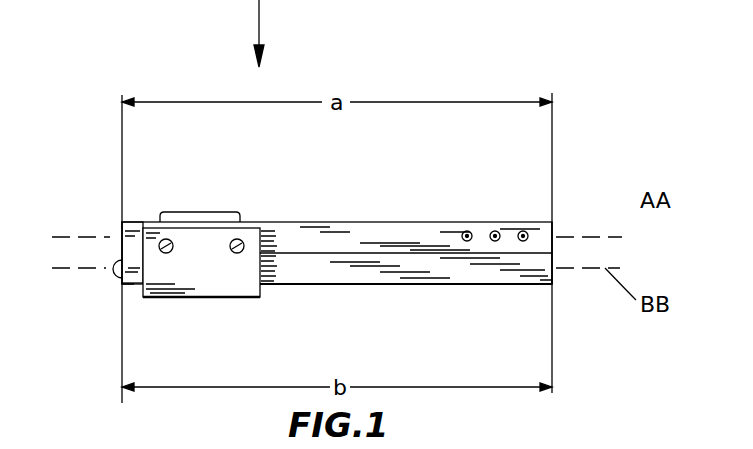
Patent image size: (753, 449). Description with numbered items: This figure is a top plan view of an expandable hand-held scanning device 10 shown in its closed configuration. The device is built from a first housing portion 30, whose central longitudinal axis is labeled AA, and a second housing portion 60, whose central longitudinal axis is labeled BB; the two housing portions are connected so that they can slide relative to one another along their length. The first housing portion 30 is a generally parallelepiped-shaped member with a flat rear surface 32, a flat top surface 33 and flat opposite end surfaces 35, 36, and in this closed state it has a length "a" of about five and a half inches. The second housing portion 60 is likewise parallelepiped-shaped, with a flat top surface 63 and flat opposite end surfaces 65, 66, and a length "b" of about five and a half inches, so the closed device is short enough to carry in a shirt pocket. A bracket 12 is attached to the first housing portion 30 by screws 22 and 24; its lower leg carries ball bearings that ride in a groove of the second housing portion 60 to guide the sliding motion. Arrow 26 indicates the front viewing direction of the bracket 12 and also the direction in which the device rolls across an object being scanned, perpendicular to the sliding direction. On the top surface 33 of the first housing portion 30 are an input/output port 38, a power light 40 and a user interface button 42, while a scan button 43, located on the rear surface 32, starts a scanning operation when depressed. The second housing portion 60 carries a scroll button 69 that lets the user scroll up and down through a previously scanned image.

The expandable hand-held scanning device 10 is at (566, 179).
The bracket 12 is at (258, 298).
The screw 22 is at (166, 239).
The screw 24 is at (238, 239).
The arrow 26 is at (262, 20).
The first housing portion 30 is at (298, 221).
The rear surface 32 is at (398, 222).
The top surface 33 is at (340, 226).
The end surface 35 is at (122, 230).
The end surface 36 is at (553, 230).
The input/output port 38 is at (523, 231).
The power light 40 is at (495, 231).
The user interface button 42 is at (466, 231).
The scan button 43 is at (196, 212).
The second housing portion 60 is at (338, 287).
The top surface 63 is at (411, 272).
The end surface 65 is at (120, 284).
The end surface 66 is at (553, 283).
The scroll button 69 is at (112, 276).